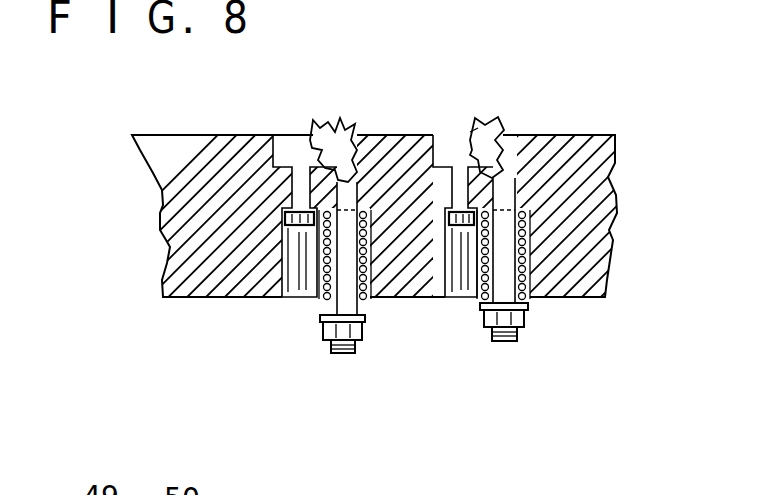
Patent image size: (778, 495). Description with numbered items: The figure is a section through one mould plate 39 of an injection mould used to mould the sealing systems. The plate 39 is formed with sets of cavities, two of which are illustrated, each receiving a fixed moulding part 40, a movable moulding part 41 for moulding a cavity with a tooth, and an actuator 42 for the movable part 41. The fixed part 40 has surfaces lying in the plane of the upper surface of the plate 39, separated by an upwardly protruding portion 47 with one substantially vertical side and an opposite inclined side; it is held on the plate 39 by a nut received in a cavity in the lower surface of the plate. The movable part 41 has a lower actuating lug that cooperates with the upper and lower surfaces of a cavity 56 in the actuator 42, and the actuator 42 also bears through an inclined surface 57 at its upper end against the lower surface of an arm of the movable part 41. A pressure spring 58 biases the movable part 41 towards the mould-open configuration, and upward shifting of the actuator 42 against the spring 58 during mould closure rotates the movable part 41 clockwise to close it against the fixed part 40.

The mould plate 39 is at (163, 205).
The fixed moulding part 40 is at (286, 150).
The movable moulding part 41 is at (337, 124).
The actuator 42 is at (502, 190).
The upwardly protruding portion 47 is at (470, 133).
The cavity 56 is at (342, 180).
The inclined surface 57 is at (367, 170).
The pressure spring 58 is at (330, 300).